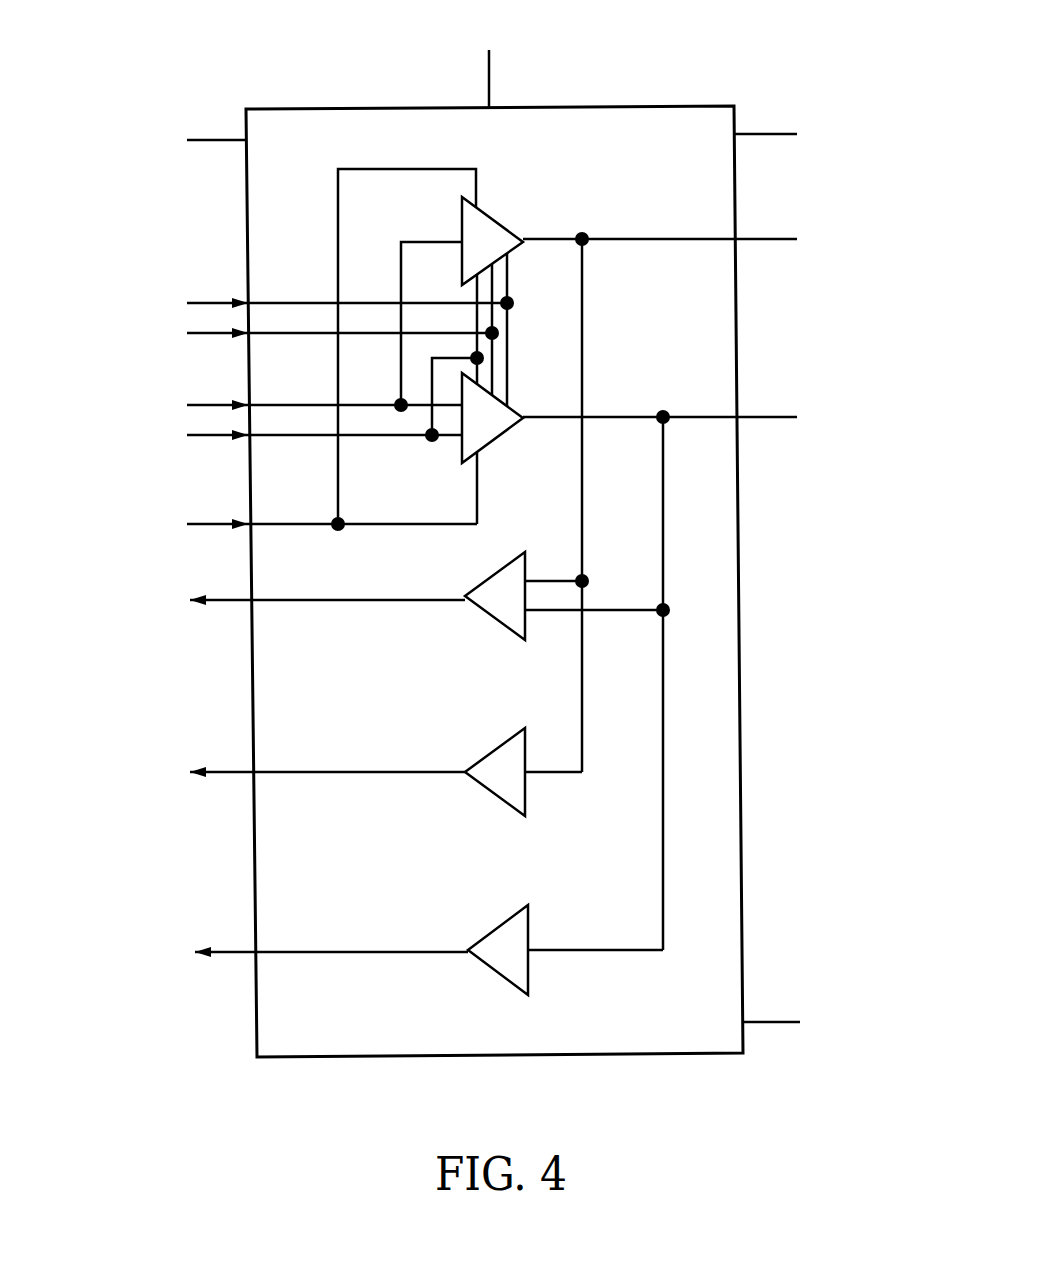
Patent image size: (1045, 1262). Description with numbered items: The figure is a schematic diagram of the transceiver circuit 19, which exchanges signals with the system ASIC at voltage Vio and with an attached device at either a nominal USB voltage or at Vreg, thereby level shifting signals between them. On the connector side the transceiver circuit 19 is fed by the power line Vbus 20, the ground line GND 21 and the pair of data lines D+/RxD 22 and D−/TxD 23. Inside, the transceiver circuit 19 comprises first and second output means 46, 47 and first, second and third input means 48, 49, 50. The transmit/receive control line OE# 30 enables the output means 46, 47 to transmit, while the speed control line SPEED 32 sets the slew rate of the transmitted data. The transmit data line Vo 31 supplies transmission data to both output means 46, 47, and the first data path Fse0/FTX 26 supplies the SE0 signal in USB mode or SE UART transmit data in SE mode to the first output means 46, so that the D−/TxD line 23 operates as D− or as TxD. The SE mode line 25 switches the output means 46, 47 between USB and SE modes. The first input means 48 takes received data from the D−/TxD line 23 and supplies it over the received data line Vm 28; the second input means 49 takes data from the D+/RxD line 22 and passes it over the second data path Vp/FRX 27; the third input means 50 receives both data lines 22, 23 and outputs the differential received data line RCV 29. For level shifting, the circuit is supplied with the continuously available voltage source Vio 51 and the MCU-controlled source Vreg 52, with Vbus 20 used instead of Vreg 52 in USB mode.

The transceiver circuit 19 is at (494, 581).
The power line Vbus 20 is at (816, 134).
The ground line GND 21 is at (825, 1022).
The D+/RxD data line 22 is at (728, 498).
The D−/TxD data line 23 is at (724, 676).
The SE mode line 25 is at (273, 527).
The first data path Fse0/FTX 26 is at (259, 399).
The second data path Vp/FRX 27 is at (264, 772).
The received data line Vm 28 is at (294, 955).
The differential received data line RCV 29 is at (279, 600).
The transmit/receive control line OE# 30 is at (295, 333).
The transmit data line Vo 31 is at (288, 332).
The speed control line SPEED 32 is at (285, 303).
The first output means 46 is at (492, 418).
The second output means 47 is at (492, 241).
The first input means 48 is at (565, 950).
The second input means 49 is at (523, 772).
The third input means 50 is at (567, 596).
The voltage source Vio 51 is at (175, 140).
The voltage source Vreg 52 is at (489, 61).